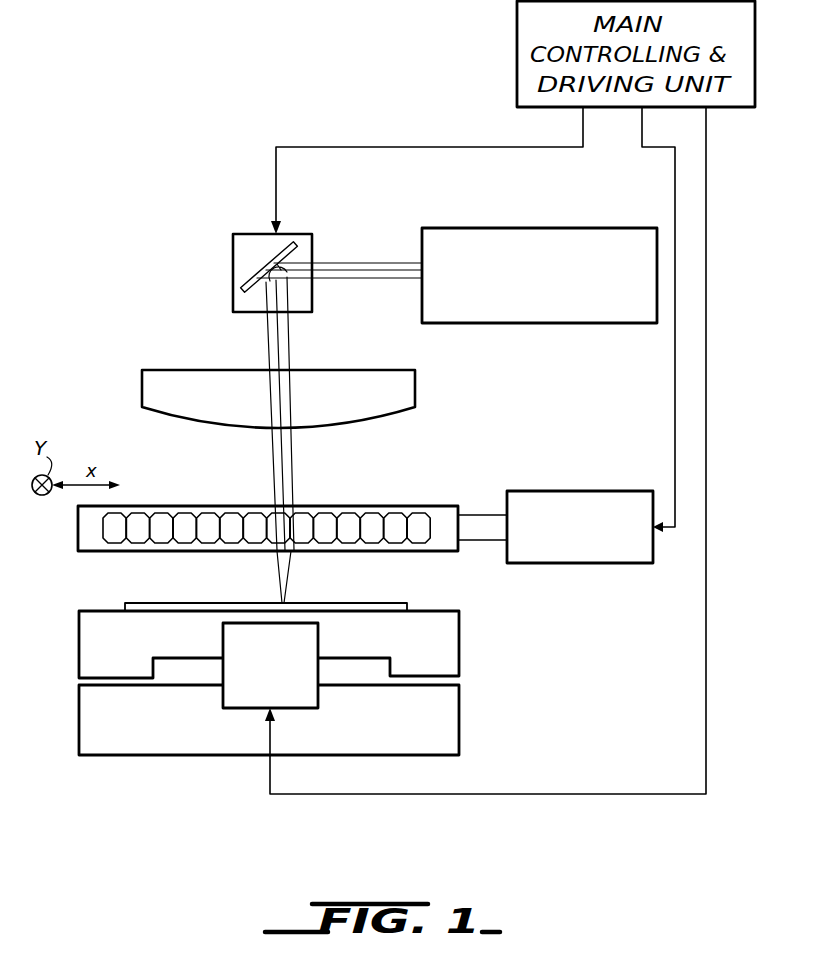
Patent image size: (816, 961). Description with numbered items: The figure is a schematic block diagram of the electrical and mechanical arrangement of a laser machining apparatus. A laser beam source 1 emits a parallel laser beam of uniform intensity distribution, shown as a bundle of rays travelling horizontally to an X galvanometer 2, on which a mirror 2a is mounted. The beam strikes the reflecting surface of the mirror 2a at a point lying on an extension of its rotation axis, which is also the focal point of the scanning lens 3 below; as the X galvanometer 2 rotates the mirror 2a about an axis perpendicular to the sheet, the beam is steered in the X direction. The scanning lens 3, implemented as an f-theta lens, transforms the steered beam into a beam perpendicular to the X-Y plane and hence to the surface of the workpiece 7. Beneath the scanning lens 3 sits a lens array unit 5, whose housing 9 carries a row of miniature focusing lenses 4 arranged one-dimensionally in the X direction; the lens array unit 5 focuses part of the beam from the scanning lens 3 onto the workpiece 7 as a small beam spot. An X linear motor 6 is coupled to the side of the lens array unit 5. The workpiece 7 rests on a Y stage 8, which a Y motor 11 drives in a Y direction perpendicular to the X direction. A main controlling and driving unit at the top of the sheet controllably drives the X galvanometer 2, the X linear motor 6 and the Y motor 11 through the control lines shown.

The laser beam source 1 is at (420, 308).
The X galvanometer 2 is at (291, 234).
The mirror 2a is at (250, 280).
The scanning lens 3 is at (155, 370).
The focusing lens 4 is at (393, 493).
The lens array unit 5 is at (372, 470).
The X linear motor 6 is at (577, 565).
The workpiece 7 is at (405, 605).
The Y stage 8 is at (440, 661).
The lens array holder 9 is at (182, 506).
The Y motor 11 is at (223, 696).